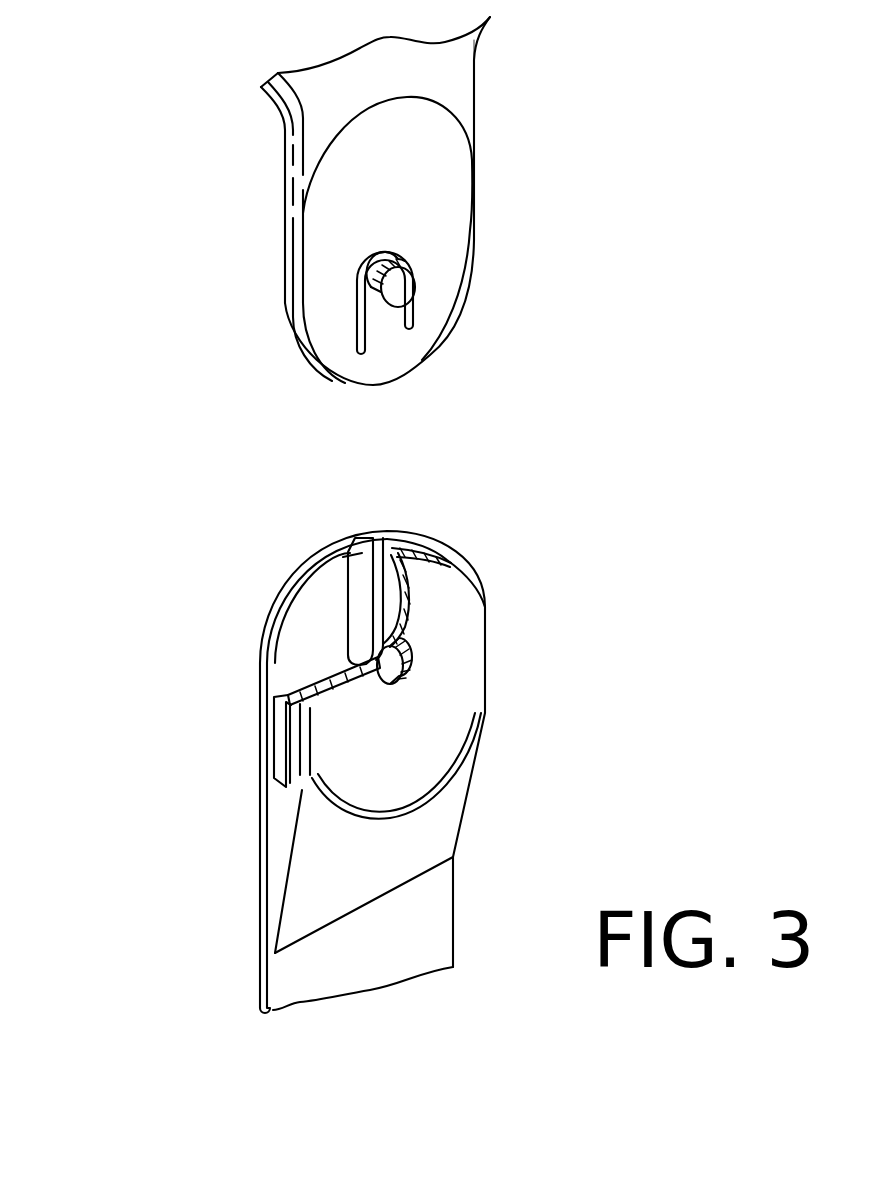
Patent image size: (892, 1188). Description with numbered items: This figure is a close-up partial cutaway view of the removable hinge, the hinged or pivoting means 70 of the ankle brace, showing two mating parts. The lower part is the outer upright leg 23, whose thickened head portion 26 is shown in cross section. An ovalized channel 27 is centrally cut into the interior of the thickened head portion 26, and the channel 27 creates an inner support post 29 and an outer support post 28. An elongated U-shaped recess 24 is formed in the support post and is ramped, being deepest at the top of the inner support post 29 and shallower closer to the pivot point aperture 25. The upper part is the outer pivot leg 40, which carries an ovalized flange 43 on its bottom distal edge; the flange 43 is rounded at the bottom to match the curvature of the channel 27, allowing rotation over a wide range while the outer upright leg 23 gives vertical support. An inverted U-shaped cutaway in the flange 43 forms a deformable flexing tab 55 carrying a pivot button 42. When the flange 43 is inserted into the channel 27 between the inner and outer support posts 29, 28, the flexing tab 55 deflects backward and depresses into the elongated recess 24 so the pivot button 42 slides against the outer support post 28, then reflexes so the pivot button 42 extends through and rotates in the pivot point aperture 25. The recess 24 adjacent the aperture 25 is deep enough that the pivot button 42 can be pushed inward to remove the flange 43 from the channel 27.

The outer upright leg 23 is at (442, 802).
The elongated recess 24 is at (360, 552).
The pivot point aperture 25 is at (412, 668).
The thickened head portion 26 is at (280, 814).
The ovalized channel 27 is at (282, 742).
The outer support post 28 is at (440, 588).
The inner support post 29 is at (297, 598).
The outer pivot leg 40 is at (312, 107).
The pivot button 42 is at (400, 287).
The flange 43 is at (360, 360).
The flexing tab 55 is at (385, 332).
The hinged or pivoting means 70 is at (652, 344).